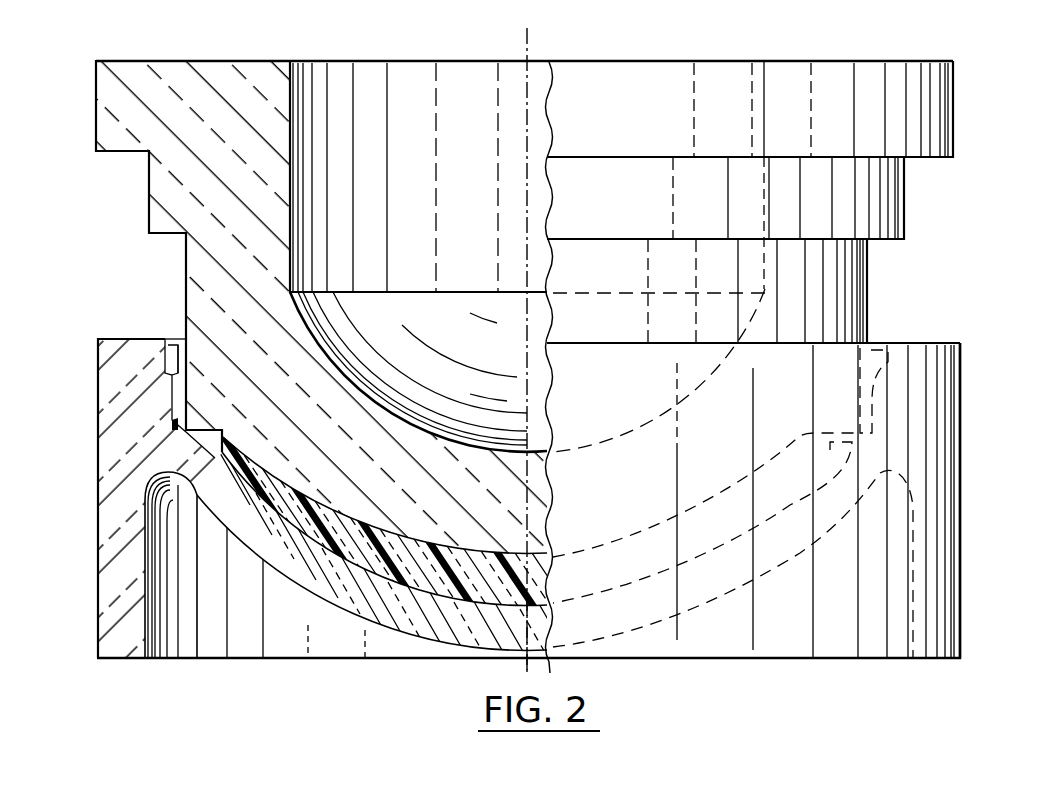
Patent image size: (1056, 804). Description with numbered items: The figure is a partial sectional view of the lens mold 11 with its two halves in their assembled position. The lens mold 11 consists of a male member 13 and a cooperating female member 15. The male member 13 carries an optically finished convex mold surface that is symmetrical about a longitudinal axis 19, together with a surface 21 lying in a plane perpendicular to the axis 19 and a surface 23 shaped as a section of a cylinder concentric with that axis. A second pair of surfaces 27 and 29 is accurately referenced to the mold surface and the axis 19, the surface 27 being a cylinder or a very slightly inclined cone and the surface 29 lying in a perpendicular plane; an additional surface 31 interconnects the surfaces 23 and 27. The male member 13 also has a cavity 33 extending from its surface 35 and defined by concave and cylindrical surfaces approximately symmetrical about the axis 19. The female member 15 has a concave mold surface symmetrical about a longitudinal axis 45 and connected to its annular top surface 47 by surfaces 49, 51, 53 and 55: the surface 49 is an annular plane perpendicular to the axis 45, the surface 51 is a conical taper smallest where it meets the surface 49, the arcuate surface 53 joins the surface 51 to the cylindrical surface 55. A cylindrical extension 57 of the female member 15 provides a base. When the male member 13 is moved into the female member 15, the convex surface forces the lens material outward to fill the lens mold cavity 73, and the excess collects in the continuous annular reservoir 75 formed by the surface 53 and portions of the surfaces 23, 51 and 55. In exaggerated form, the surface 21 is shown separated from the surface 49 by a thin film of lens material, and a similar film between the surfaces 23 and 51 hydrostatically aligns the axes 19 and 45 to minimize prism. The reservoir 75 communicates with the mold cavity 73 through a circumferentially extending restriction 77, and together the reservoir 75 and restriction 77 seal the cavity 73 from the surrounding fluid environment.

The lens mold 11 is at (935, 299).
The male member 13 is at (953, 121).
The female member 15 is at (961, 431).
The longitudinal axis 19 is at (527, 46).
The surface 21 is at (222, 428).
The surface 23 is at (186, 255).
The surface 27 is at (904, 207).
The surface 29 is at (939, 158).
The surface 31 is at (867, 242).
The cavity 33 is at (462, 177).
The surface 35 is at (656, 62).
The longitudinal axis 45 is at (525, 664).
The top surface 47 is at (937, 343).
The surface 49 is at (188, 453).
The surface 51 is at (171, 423).
The surface 53 is at (170, 386).
The surface 55 is at (135, 340).
The cylindrical extension 57 is at (98, 559).
The lens mold cavity 73 is at (372, 577).
The annular reservoir 75 is at (178, 340).
The circumferentially extending restriction 77 is at (852, 444).